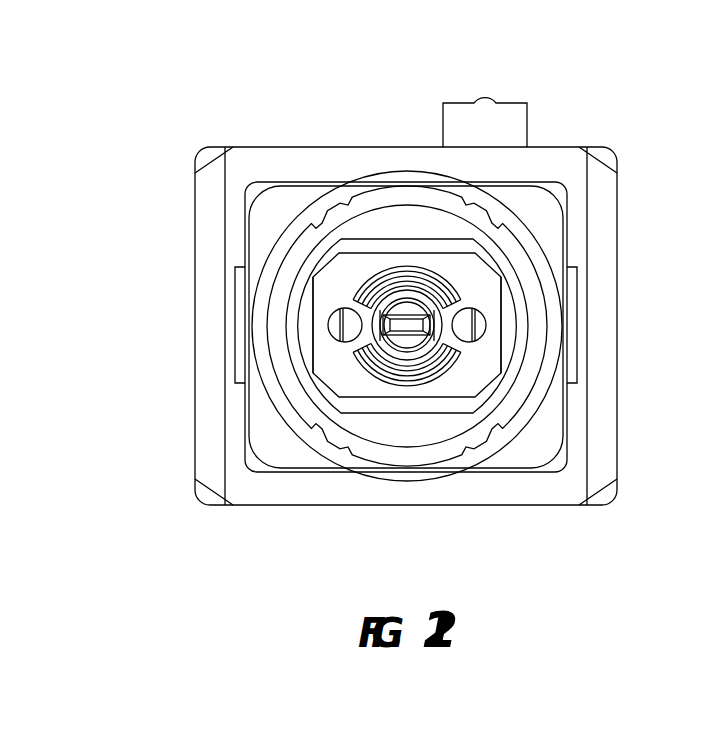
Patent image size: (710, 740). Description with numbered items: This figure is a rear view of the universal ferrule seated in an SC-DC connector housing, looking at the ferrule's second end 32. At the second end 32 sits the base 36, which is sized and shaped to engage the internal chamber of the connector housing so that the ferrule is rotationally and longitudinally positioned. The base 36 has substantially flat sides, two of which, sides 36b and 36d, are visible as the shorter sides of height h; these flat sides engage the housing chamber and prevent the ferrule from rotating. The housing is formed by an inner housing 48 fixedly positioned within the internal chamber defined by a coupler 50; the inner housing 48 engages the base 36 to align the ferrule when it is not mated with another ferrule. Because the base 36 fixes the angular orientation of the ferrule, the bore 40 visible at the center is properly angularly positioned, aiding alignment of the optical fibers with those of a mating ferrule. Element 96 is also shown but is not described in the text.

The second end 32 is at (334, 380).
The base 36 is at (383, 413).
The flat side 36b is at (310, 347).
The flat side 36d is at (507, 335).
The bore 40 is at (418, 312).
The inner housing 48 is at (443, 233).
The coupler 50 is at (558, 157).
The fastener opening 96 is at (480, 310).